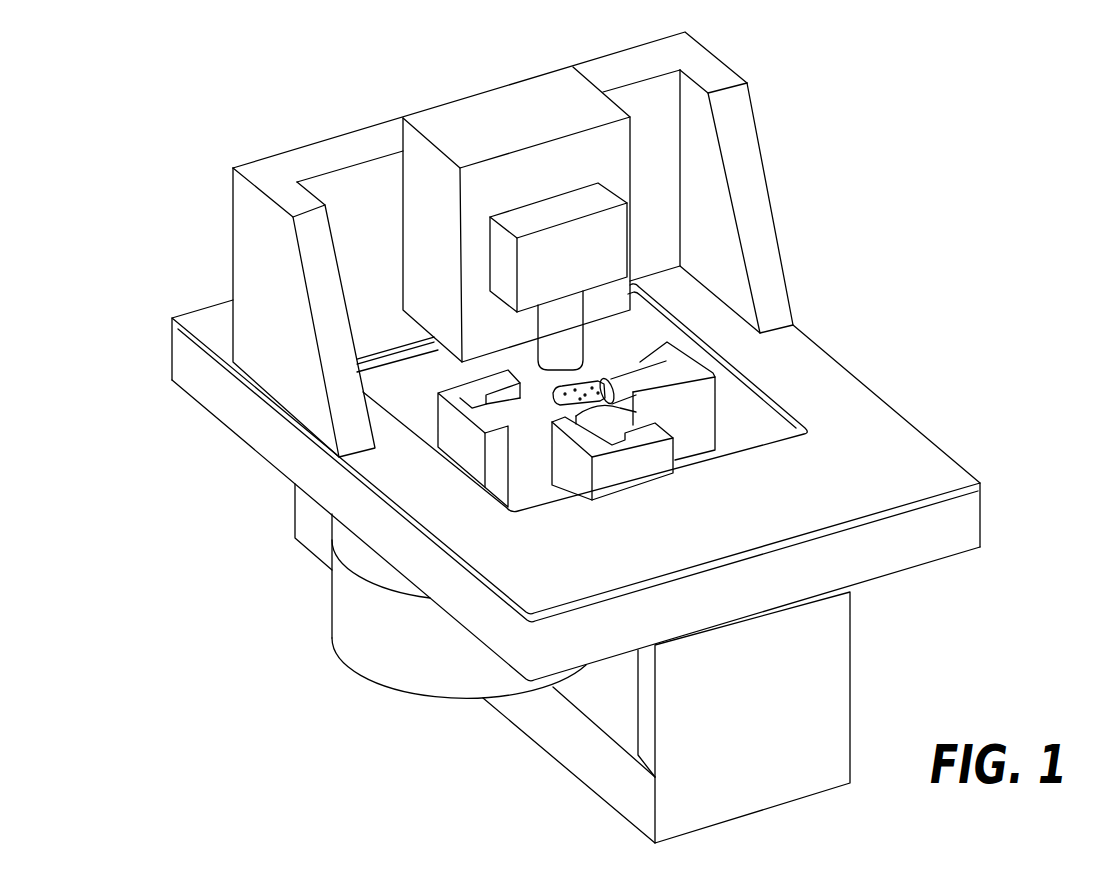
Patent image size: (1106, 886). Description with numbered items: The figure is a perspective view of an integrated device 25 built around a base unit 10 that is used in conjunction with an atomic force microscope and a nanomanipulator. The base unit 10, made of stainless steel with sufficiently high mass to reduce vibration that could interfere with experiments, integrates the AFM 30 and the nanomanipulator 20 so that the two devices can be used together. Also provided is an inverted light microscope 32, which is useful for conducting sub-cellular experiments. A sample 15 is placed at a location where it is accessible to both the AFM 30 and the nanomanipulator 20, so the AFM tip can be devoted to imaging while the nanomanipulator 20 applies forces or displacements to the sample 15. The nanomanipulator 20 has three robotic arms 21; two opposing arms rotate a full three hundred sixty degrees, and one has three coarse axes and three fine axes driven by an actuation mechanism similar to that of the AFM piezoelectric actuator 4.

The base unit 10 is at (907, 437).
The integrated device 25 is at (131, 179).
The AFM 30 is at (673, 52).
The inverted light microscope 32 is at (840, 666).
The AFM piezoelectric actuator 4 is at (620, 378).
The robotic arms 21 is at (585, 386).
The sample 15 is at (572, 414).
The nanomanipulator 20 is at (700, 380).